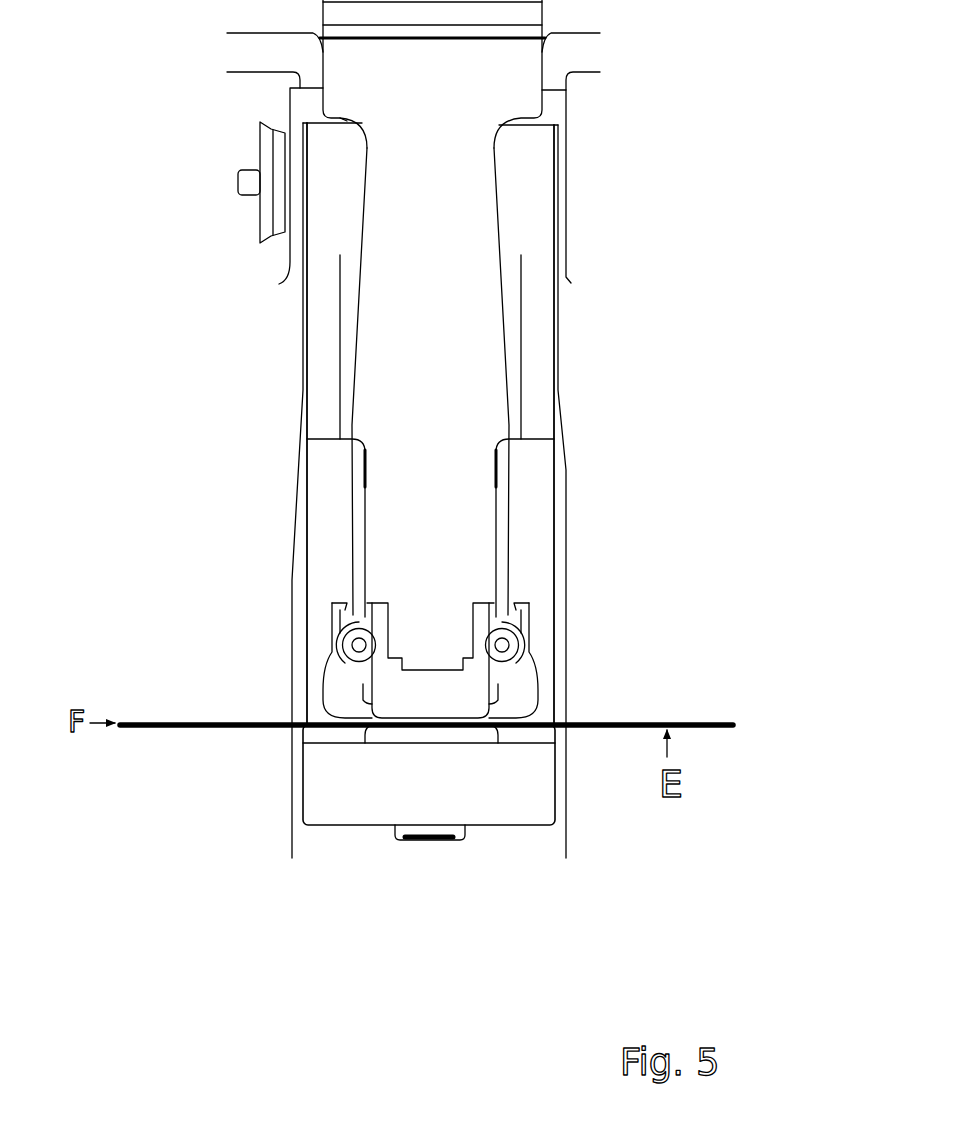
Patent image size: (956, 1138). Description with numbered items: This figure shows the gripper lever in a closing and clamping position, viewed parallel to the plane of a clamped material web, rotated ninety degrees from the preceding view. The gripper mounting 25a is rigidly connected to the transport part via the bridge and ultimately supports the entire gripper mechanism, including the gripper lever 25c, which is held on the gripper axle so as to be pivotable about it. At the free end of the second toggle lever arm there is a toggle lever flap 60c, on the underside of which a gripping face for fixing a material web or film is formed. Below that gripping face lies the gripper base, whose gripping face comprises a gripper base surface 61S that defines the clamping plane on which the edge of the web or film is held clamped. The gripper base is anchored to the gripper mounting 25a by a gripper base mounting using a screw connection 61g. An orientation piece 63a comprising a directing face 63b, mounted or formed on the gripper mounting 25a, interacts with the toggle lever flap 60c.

The gripper mounting 25a is at (322, 397).
The gripper lever 25c is at (437, 508).
The toggle lever flap 60c is at (407, 695).
The orientation piece 63a is at (527, 663).
The directing face 63b is at (510, 678).
The gripper base surface 61S is at (420, 738).
The screw connection 61g is at (410, 838).